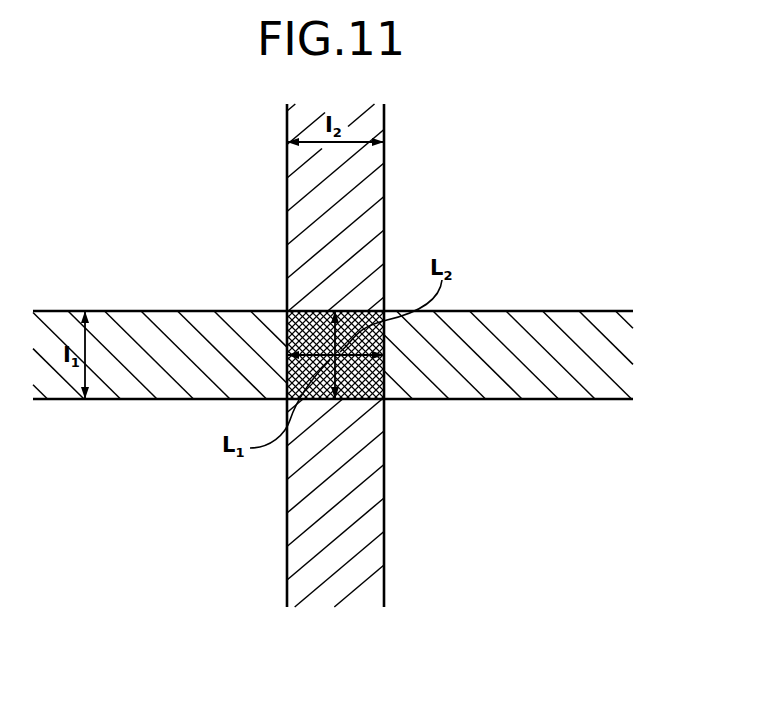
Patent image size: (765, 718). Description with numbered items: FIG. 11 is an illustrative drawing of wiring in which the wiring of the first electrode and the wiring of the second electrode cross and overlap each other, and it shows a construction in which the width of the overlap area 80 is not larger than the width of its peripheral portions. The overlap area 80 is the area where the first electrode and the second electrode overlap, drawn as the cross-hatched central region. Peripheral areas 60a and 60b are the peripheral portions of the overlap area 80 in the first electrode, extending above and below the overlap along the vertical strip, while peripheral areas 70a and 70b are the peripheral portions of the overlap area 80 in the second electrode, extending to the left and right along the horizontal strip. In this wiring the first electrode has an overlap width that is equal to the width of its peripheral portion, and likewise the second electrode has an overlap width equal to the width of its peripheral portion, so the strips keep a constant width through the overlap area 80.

The peripheral area 60a is at (358, 198).
The peripheral area 60b is at (358, 553).
The peripheral area 70a is at (167, 329).
The peripheral area 70b is at (565, 323).
The overlap area 80 is at (372, 388).